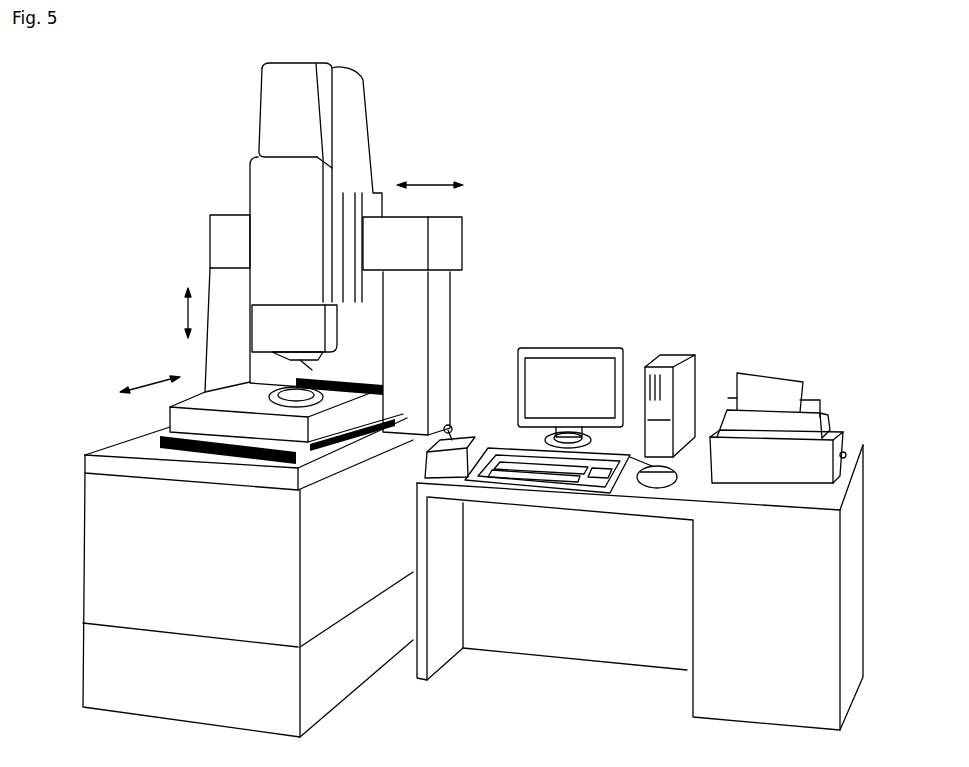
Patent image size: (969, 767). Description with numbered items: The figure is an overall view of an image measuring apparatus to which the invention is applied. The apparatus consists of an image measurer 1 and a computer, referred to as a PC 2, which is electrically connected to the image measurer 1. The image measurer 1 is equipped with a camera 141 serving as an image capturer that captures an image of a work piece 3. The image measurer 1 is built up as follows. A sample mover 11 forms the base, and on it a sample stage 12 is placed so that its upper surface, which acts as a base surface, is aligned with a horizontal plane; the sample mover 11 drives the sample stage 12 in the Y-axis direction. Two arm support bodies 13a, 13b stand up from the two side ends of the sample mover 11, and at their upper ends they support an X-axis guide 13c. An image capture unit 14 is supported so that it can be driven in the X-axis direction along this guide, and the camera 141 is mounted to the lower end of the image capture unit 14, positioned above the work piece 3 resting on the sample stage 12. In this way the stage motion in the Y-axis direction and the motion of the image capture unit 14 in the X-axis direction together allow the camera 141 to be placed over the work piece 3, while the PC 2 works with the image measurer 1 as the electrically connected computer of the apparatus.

The image measurer 1 is at (392, 92).
The computer (PC) 2 is at (637, 322).
The work piece 3 is at (310, 405).
The sample mover 11 is at (140, 433).
The sample stage 12 is at (245, 395).
The arm support body 13a is at (446, 320).
The arm support body 13b is at (207, 284).
The X-axis guide 13c is at (222, 213).
The image capture unit 14 is at (258, 100).
The camera 141 is at (312, 368).